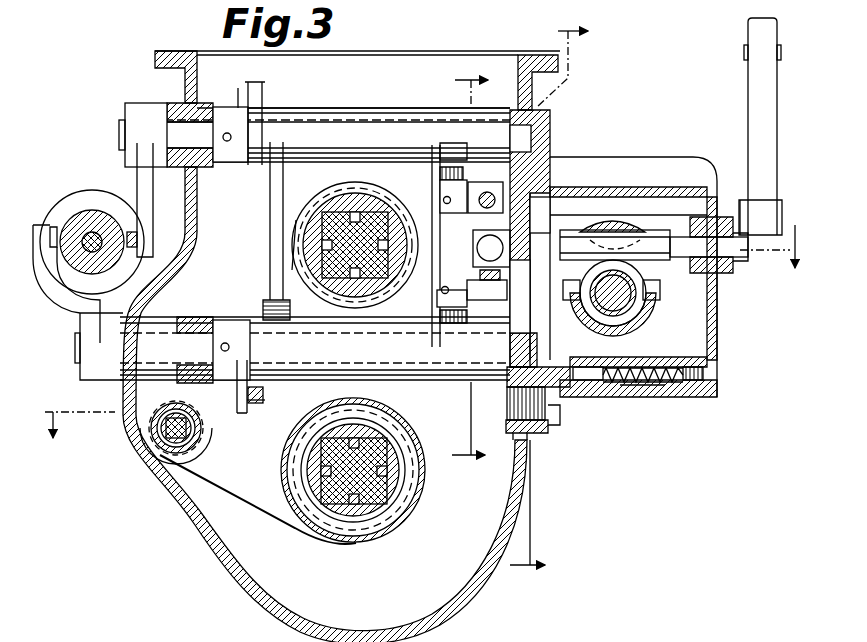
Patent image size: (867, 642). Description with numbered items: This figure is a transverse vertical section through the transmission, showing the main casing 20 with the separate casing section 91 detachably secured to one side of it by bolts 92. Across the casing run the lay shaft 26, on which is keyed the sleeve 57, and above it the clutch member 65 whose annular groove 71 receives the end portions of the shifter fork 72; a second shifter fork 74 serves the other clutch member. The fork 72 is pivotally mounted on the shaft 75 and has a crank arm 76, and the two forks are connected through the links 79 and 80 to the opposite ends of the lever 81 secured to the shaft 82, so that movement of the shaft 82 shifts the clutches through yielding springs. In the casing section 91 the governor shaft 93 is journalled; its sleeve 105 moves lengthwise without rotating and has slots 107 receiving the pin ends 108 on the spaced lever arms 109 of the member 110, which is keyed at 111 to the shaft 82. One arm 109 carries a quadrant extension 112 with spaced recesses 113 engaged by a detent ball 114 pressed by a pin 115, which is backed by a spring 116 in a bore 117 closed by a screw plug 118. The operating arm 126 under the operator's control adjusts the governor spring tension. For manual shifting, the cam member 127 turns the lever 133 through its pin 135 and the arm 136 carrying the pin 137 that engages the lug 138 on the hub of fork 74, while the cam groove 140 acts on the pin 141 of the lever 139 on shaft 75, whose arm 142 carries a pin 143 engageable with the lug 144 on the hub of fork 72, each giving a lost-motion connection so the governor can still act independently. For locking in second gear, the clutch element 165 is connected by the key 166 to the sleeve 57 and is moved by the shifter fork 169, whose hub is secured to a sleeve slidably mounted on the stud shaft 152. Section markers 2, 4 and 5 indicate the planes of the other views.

The section line 2- 2 is at (421, 347).
The section line 4- 4 is at (549, 301).
The section line 5- 5 is at (470, 278).
The casing 20 is at (197, 562).
The lay shaft 26 is at (350, 470).
The sleeve 57 is at (370, 500).
The clutch member 65 is at (333, 205).
The annular groove 71 is at (333, 295).
The shifter fork 72 is at (433, 182).
The shifter fork 74 is at (268, 283).
The shaft 75 is at (205, 135).
The crank arm 76 is at (465, 160).
The link 79 is at (487, 194).
The link 80 is at (453, 322).
The lever 81 is at (481, 263).
The shaft 82 is at (520, 238).
The casing section 91 is at (595, 165).
The bolts 92 is at (550, 422).
The shaft 93 is at (632, 295).
The sleeve 105 is at (626, 333).
The slots 107 is at (568, 318).
The pin ends 108 is at (570, 283).
The lever arms 109 is at (548, 298).
The member 110 is at (655, 212).
The key 111 is at (615, 212).
The quadrant extension 112 is at (523, 350).
The recesses 113 is at (540, 372).
The ball 114 is at (638, 356).
The pin 115 is at (588, 392).
The spring 116 is at (633, 392).
The bore 117 is at (680, 392).
The screw plug 118 is at (707, 372).
The operating arm 126 is at (750, 108).
The cam member 127 is at (88, 202).
The lever 133 is at (50, 268).
The pin 135 is at (56, 226).
The arm 136 is at (250, 403).
The pin 137 is at (264, 393).
The lug 138 is at (258, 404).
The lever 139 is at (147, 193).
The cam groove 140 is at (80, 275).
The pin 141 is at (137, 240).
The arm 142 is at (237, 100).
The pin 143 is at (265, 86).
The lug 144 is at (265, 103).
The stud shaft 152 is at (148, 452).
The clutch element 165 is at (408, 512).
The key 166 is at (385, 462).
The shifter fork 169 is at (258, 482).